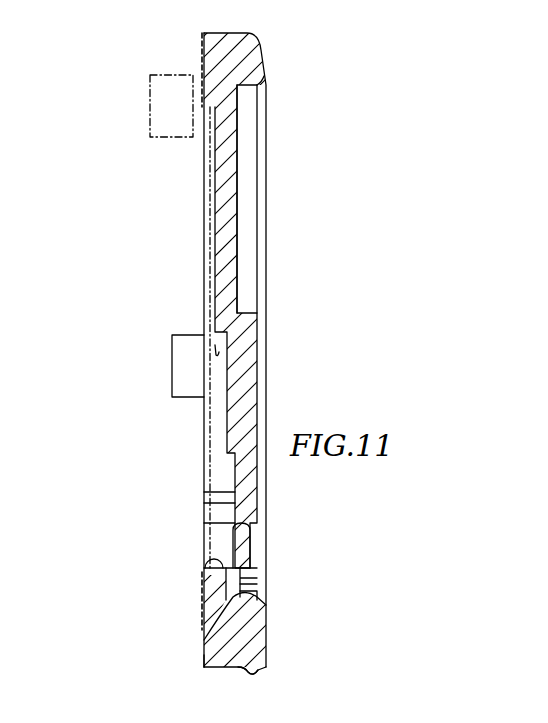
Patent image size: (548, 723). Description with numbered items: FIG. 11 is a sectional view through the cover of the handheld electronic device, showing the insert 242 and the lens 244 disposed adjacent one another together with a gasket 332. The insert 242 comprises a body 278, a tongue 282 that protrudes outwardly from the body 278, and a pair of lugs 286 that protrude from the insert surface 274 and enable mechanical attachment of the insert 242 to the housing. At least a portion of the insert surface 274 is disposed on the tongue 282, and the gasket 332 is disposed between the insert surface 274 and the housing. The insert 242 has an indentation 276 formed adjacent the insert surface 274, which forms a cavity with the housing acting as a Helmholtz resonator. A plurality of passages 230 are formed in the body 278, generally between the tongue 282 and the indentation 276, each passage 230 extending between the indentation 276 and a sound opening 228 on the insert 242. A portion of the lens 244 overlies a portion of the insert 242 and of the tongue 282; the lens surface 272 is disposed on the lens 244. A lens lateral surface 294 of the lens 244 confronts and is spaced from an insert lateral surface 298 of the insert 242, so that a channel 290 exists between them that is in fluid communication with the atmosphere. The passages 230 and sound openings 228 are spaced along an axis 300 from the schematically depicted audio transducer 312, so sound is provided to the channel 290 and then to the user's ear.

The insert 242 is at (262, 46).
The insert surface 274 is at (203, 36).
The body 278 is at (268, 146).
The audio transducer 312 is at (150, 115).
The axis 300 is at (208, 430).
The lugs 286 is at (172, 356).
The indentation 276 is at (215, 350).
The passages 230 is at (222, 490).
The sound openings 228 is at (218, 567).
The gasket 332 is at (203, 583).
The insert lateral surface 298 is at (256, 578).
The channel 290 is at (258, 584).
The lens lateral surface 294 is at (260, 591).
The tongue 282 is at (202, 635).
The lens surface 272 is at (203, 660).
The lens 244 is at (250, 675).